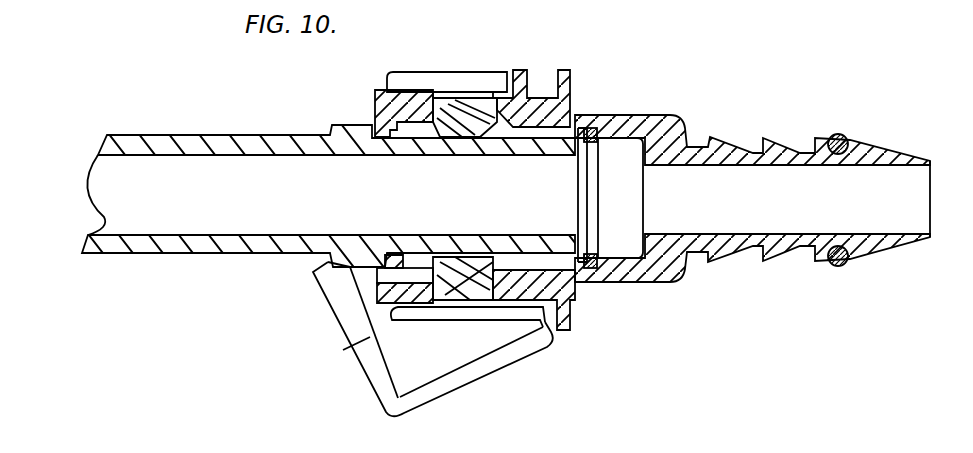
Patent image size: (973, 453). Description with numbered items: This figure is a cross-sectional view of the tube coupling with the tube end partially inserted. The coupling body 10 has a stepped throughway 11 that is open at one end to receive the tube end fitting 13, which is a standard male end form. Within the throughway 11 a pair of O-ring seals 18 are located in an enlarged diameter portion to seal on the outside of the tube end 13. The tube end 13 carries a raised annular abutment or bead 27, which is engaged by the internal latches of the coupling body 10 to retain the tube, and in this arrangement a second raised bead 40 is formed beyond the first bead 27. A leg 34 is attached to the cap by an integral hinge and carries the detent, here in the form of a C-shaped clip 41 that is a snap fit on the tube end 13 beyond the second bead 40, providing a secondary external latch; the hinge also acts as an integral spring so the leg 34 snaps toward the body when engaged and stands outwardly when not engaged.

The coupling body 10 is at (488, 60).
The stepped throughway 11 is at (705, 183).
The tube end fitting 13 is at (178, 134).
The O-ring seals 18 is at (597, 122).
The raised annular abutment or bead 27 is at (427, 142).
The leg 34 is at (467, 380).
The second raised bead 40 is at (357, 132).
The C-shaped clip 41 is at (330, 311).